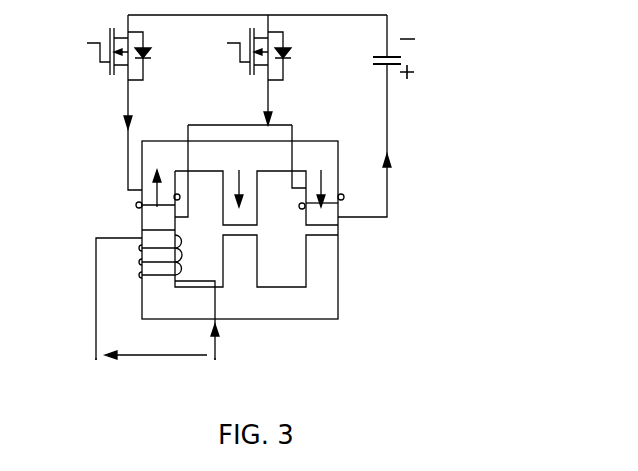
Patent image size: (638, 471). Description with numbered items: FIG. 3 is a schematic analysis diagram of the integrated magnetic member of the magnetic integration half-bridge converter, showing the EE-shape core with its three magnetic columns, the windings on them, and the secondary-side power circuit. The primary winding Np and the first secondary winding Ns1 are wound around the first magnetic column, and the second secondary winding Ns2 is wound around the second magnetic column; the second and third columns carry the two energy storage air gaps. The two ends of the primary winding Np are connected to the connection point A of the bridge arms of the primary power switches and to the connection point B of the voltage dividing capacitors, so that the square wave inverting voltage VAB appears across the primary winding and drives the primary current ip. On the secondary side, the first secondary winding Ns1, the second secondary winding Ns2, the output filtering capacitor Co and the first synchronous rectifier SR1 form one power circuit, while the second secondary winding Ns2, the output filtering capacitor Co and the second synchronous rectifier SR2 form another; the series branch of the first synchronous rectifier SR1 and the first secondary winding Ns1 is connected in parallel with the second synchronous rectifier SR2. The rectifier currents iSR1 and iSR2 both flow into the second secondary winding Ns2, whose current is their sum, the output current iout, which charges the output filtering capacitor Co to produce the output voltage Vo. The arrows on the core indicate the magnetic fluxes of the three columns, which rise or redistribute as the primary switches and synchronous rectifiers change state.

The first synchronous rectifier SR1 is at (103, 56).
The second synchronous rectifier SR2 is at (243, 56).
The current of the first secondary winding iSR1 is at (105, 117).
The current of the second synchronous rectifier iSR2 is at (246, 112).
The output filtering capacitor Co is at (370, 66).
The output voltage Vo is at (428, 59).
The current output iout is at (406, 170).
The first secondary winding Ns1 is at (137, 209).
The second secondary winding Ns2 is at (339, 204).
The primary winding Np is at (142, 261).
The current of the primary winding ip is at (227, 341).
The square wave inverting voltage VAB is at (156, 372).
The connection point of bridge arms A is at (227, 373).
The connection point of voltage dividing capacitors B is at (86, 373).